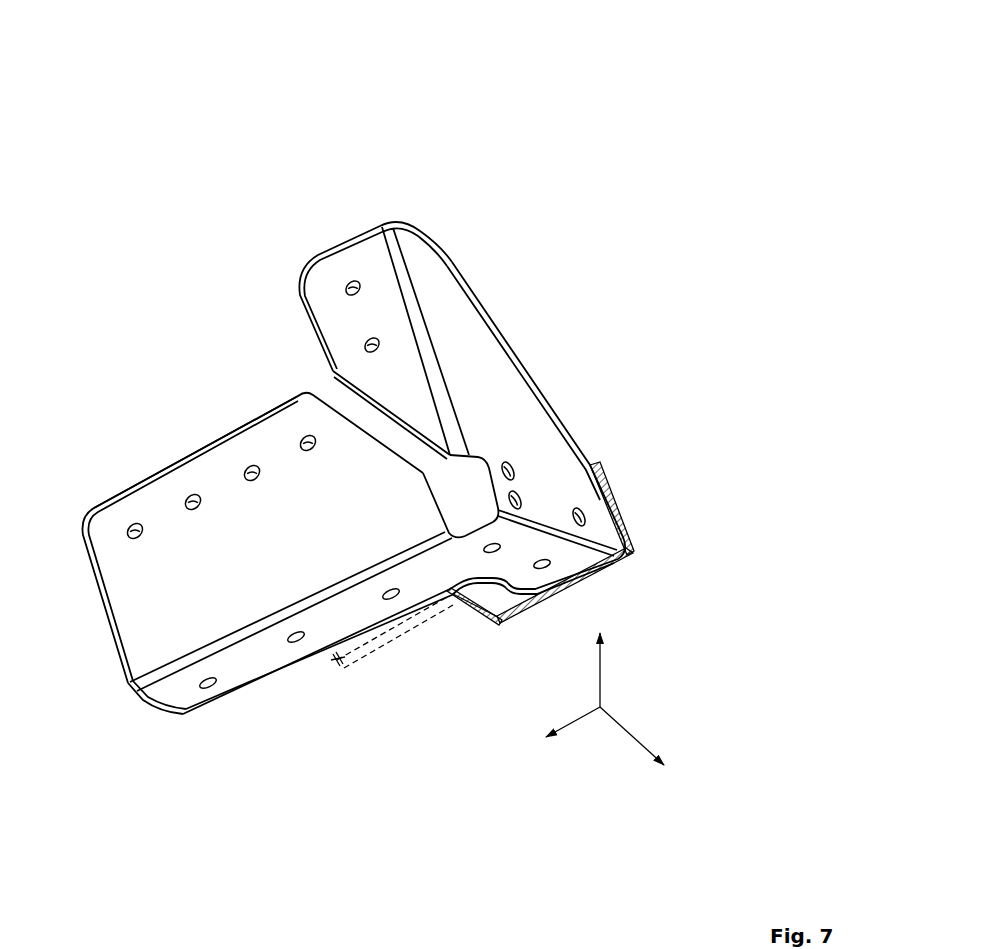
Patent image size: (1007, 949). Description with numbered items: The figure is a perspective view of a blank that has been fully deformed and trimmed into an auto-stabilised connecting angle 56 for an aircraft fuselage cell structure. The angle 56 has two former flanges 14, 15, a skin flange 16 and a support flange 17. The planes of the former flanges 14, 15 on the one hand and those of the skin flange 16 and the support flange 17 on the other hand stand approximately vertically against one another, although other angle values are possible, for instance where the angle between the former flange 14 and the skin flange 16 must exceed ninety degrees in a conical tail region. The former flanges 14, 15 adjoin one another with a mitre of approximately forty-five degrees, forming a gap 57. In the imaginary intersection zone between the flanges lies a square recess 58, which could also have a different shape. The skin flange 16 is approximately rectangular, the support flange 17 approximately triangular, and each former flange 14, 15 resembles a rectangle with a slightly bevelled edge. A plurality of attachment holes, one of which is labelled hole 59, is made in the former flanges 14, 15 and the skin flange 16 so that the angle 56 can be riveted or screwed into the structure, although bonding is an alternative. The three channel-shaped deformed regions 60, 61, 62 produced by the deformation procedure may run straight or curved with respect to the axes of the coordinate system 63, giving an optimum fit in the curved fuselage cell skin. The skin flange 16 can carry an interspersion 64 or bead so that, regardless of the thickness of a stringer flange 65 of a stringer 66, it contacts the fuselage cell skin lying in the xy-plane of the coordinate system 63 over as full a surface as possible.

The auto-stabilised angle 56 is at (298, 107).
The former flange 14 is at (238, 552).
The former flange 15 is at (384, 391).
The skin flange 16 is at (332, 628).
The support flange 17 is at (466, 378).
The gap 57 is at (324, 386).
The square recess 58 is at (450, 504).
The hole 59 is at (352, 283).
The deformed region 60 is at (132, 690).
The deformed region 61 is at (392, 238).
The deformed region 62 is at (602, 544).
The coordinate system 63 is at (604, 702).
The interspersion 64 is at (378, 645).
The stringer flange 65 is at (504, 597).
The stringer 66 is at (607, 471).